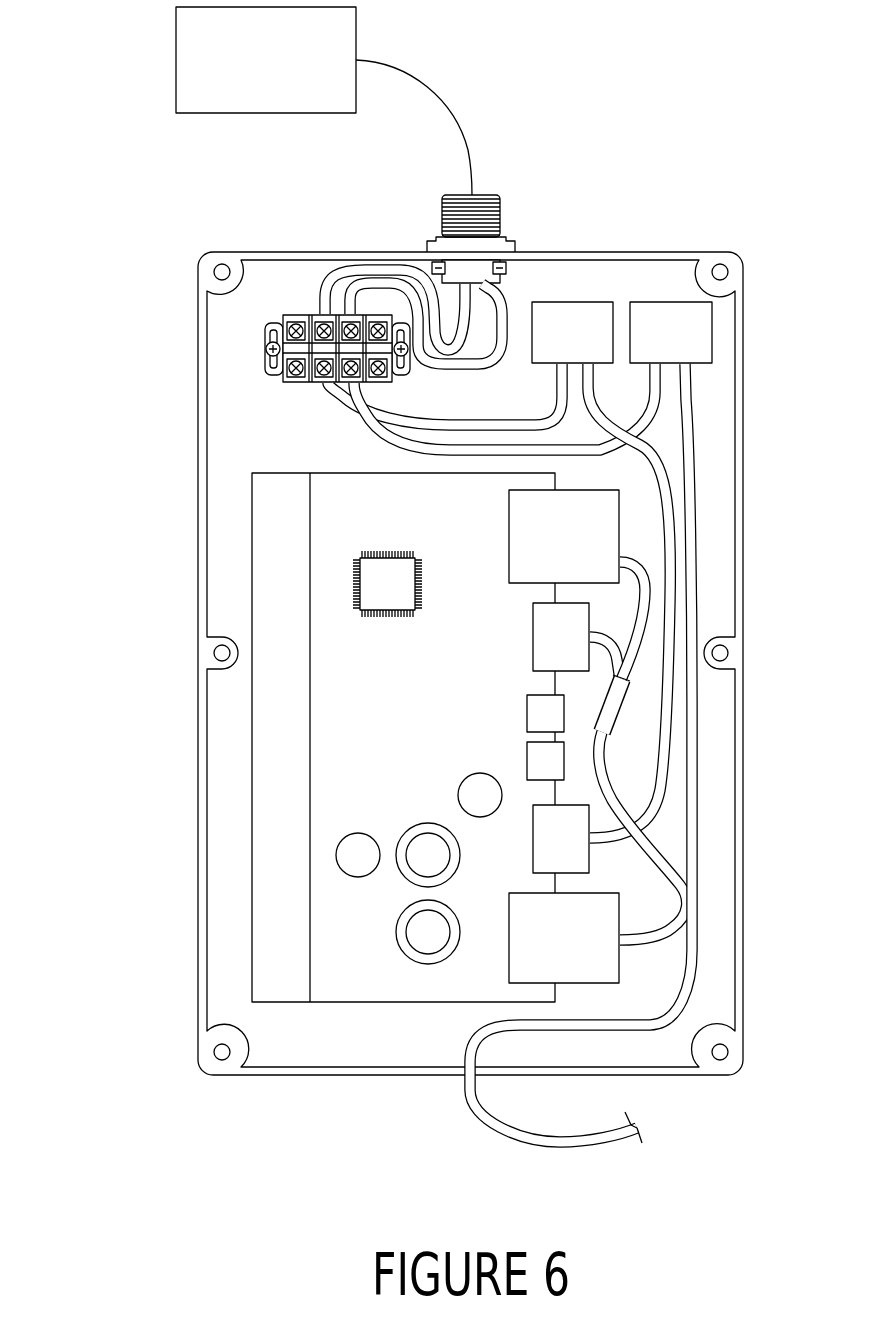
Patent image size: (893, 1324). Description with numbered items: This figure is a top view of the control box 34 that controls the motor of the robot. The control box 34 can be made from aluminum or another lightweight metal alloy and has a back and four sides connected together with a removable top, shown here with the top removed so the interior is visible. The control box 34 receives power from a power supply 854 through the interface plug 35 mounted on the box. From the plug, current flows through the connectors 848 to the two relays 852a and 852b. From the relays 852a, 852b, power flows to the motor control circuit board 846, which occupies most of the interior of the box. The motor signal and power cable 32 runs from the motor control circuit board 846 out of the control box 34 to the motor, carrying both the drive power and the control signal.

The control box 34 is at (205, 860).
The power supply 854 is at (176, 62).
The interface plug 35 is at (500, 222).
The relay 852a is at (573, 302).
The relay 852b is at (671, 302).
The motor control circuit board 846 is at (340, 498).
The connectors 848 is at (298, 315).
The motor signal and power cable 32 is at (478, 1047).